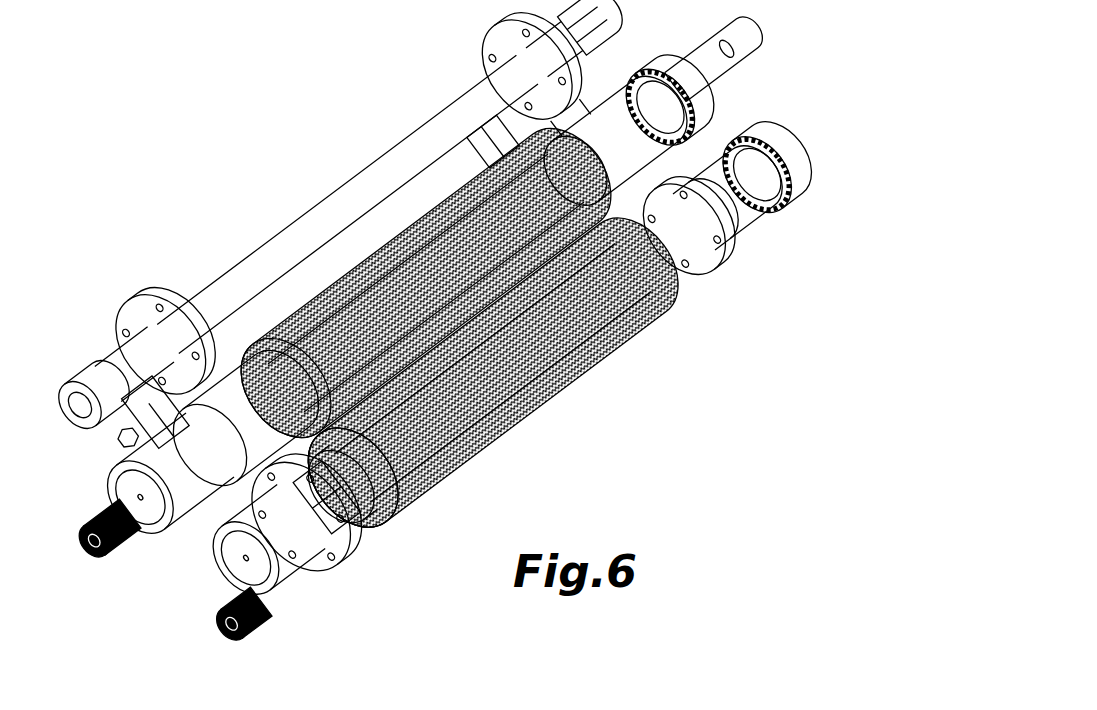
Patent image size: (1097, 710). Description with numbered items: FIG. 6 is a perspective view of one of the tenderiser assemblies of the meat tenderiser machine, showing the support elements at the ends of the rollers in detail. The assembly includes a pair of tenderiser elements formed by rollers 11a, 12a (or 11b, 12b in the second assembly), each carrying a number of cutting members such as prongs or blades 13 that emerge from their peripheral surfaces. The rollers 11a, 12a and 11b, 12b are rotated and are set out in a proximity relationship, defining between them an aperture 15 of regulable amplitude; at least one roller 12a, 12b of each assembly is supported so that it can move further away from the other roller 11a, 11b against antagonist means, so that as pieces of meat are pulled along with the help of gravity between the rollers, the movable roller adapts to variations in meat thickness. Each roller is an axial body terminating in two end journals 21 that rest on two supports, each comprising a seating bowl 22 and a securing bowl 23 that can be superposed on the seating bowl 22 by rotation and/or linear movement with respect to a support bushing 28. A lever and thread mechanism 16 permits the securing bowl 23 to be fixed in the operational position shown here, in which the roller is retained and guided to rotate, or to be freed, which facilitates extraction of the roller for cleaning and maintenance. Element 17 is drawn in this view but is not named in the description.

The tenderiser roller 11a is at (493, 373).
The tenderiser roller 11b is at (602, 368).
The tenderiser roller 12a is at (426, 279).
The tenderiser roller 12b is at (483, 177).
The prongs or blades 13 is at (365, 252).
The aperture 15 is at (706, 148).
The lever and thread mechanism 16 is at (102, 540).
The bearing housing 17 is at (490, 140).
The end journal 21 is at (393, 507).
The seating bowl 22 is at (380, 523).
The securing bowl 23 is at (377, 510).
The support bushing 28 is at (293, 548).